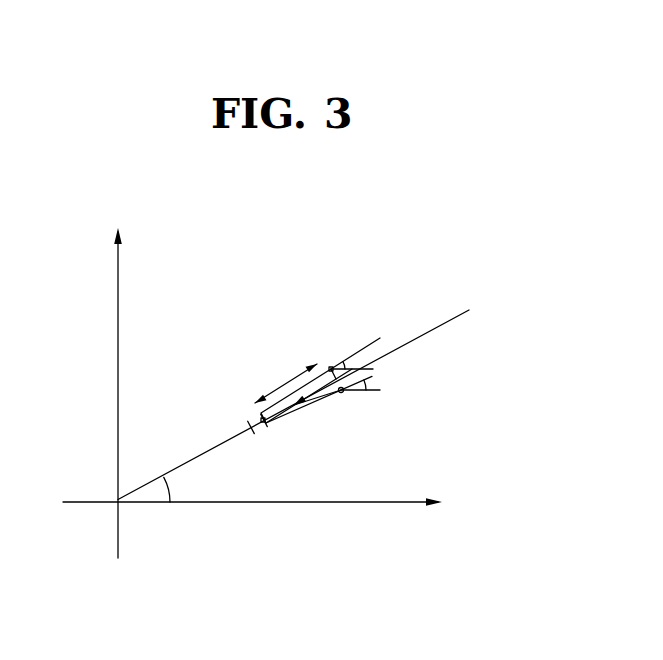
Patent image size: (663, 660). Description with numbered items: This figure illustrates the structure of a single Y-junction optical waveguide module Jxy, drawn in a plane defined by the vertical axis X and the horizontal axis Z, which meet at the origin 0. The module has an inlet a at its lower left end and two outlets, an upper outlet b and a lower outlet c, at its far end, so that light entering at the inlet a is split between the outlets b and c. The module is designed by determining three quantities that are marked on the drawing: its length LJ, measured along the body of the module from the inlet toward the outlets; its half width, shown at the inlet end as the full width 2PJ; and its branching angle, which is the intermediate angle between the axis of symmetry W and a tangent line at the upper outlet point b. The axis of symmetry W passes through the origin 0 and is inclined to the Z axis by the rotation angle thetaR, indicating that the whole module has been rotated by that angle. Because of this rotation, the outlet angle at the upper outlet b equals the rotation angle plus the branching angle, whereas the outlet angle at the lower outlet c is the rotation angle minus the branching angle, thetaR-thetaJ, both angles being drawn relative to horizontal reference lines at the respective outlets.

The X axis X is at (116, 376).
The Z axis Z is at (269, 503).
The origin 0 is at (95, 520).
The axis of symmetry W is at (307, 394).
The rotation angle thetaR is at (186, 490).
The Y-junction optical waveguide module Jxy is at (316, 407).
The inlet a is at (267, 424).
The upper outlet b is at (331, 366).
The lower outlet c is at (342, 394).
The length LJ is at (286, 378).
The full width (twice the half width) 2PJ is at (256, 418).
The outlet angle at lower outlet thetaR-thetaJ is at (366, 384).